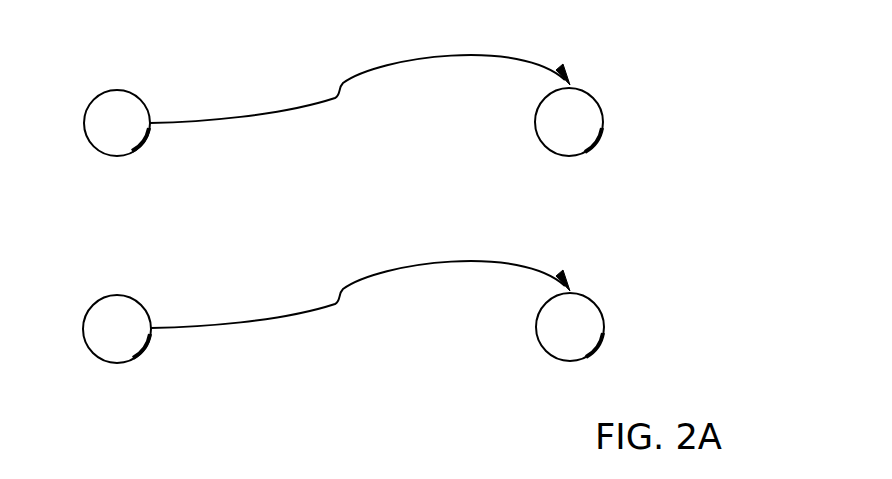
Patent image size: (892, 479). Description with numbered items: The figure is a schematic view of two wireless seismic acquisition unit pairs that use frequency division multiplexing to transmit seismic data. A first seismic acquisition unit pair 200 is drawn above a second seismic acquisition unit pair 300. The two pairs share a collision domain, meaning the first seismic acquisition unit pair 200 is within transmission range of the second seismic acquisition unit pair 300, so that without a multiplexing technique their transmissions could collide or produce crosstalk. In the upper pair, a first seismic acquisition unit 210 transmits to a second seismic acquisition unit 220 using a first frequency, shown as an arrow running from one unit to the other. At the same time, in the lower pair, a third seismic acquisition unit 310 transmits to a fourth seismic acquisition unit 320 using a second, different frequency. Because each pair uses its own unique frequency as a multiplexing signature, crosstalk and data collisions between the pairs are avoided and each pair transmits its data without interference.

The first seismic acquisition unit pair 200 is at (438, 130).
The first seismic acquisition unit 210 is at (119, 147).
The second seismic acquisition unit 220 is at (581, 139).
The second seismic acquisition unit pair 300 is at (421, 338).
The third seismic acquisition unit 310 is at (125, 357).
The fourth seismic acquisition unit 320 is at (565, 352).